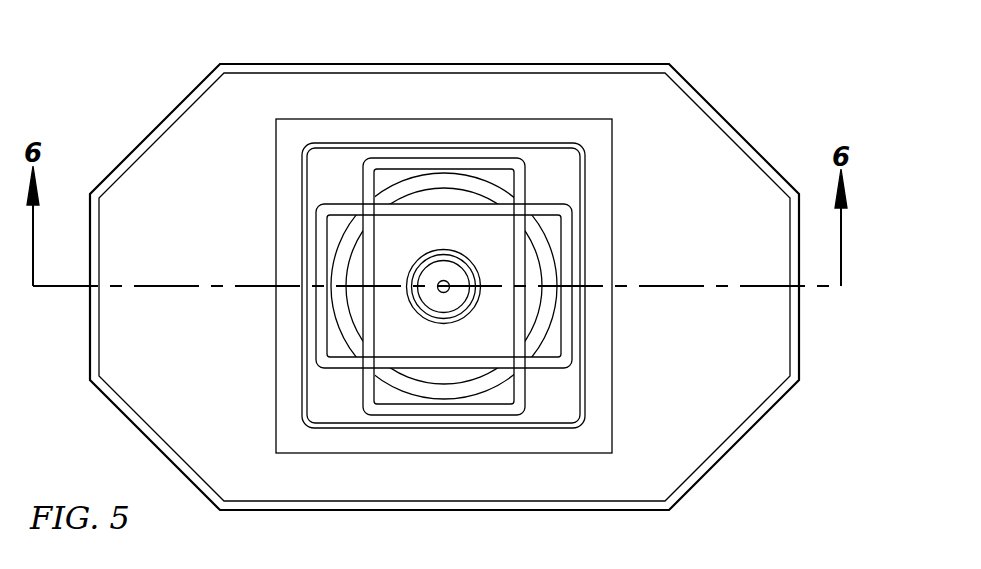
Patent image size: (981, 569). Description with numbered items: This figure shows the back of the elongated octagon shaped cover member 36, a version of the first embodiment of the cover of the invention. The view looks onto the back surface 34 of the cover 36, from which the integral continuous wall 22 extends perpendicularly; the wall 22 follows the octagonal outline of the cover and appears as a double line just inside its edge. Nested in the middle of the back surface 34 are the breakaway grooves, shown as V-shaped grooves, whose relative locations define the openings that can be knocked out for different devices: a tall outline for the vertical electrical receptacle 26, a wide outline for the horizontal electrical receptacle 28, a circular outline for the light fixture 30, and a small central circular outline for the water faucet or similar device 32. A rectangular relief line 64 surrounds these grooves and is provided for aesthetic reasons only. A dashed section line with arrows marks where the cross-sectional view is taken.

The integral continuous wall 22 is at (583, 150).
The vertical electrical receptacle 26 is at (368, 182).
The horizontal electrical receptacle 28 is at (322, 245).
The light fixture 30 is at (545, 262).
The water faucet 32 is at (480, 297).
The back surface 34 is at (539, 191).
The elongated octagon shaped cover member 36 is at (758, 93).
The relief line 64 is at (612, 428).